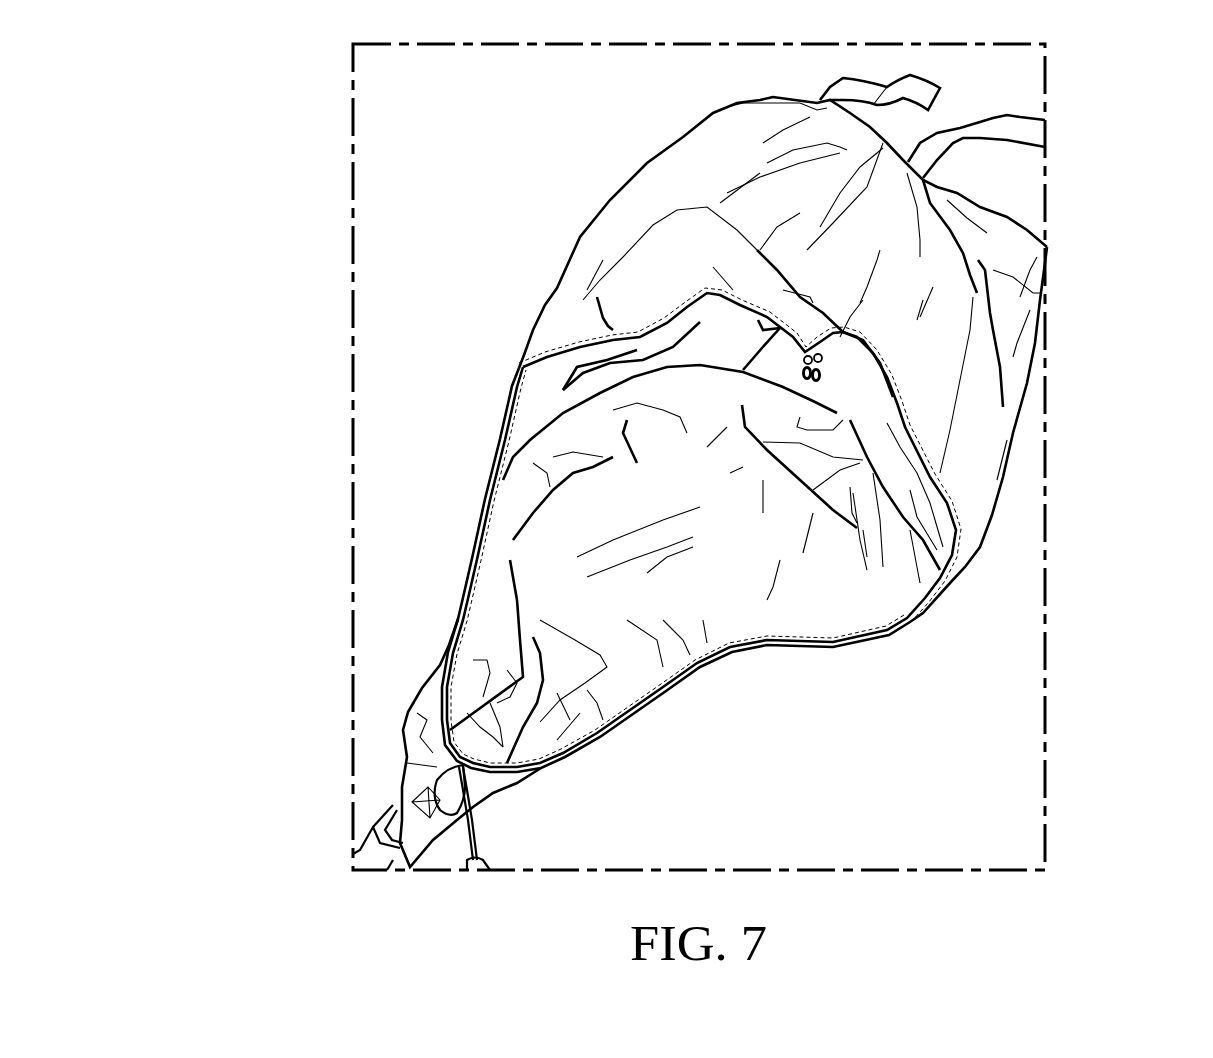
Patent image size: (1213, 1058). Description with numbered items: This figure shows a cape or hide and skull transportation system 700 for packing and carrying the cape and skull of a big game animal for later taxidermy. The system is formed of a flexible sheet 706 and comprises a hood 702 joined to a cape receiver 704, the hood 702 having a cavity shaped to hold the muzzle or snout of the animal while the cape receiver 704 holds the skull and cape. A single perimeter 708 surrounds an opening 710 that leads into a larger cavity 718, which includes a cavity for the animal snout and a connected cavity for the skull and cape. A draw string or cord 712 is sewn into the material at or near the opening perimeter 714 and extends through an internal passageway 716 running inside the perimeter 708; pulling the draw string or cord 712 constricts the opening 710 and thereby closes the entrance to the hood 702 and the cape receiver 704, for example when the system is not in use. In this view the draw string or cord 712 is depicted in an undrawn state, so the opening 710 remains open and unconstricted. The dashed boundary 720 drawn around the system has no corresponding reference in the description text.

The cape or hide and skull transportation system 700 is at (267, 785).
The hood 702 is at (403, 720).
The cape receiver 704 is at (789, 509).
The flexible sheet 706 is at (637, 463).
The perimeter 708 is at (640, 710).
The opening 710 is at (352, 675).
The draw string or cord 712 is at (999, 435).
The opening perimeter 714 is at (1016, 494).
The internal passageway 716 is at (783, 237).
The larger cavity 718 is at (550, 600).
The enclosure boundary 720 is at (755, 499).